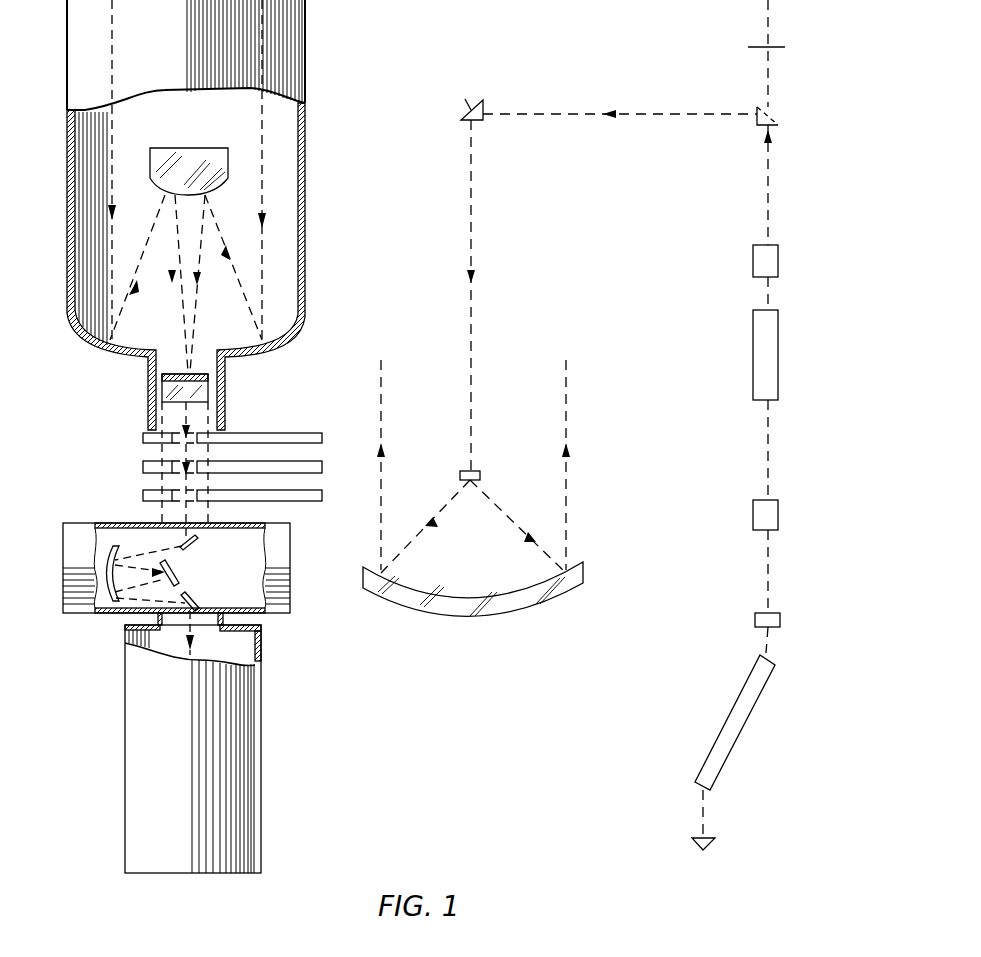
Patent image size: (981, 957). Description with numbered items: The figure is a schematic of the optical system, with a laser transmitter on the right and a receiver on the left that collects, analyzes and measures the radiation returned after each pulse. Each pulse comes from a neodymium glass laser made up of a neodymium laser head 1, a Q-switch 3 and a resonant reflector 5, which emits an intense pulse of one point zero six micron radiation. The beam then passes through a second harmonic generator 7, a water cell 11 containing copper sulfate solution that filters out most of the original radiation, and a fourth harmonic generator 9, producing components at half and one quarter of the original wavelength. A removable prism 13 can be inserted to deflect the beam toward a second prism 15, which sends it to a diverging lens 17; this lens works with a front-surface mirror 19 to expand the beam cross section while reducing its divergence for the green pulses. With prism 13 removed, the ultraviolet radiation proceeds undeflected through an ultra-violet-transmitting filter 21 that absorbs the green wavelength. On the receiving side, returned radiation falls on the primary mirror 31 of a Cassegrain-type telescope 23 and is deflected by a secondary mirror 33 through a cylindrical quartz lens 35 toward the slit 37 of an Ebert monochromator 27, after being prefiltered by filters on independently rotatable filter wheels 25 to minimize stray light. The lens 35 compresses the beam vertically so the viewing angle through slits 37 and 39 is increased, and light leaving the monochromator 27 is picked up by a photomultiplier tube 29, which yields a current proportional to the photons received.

The neodymium laser head 1 is at (743, 728).
The Q-switch 3 is at (712, 846).
The resonant reflector 5 is at (780, 620).
The second harmonic generator 7 is at (779, 520).
The fourth harmonic generator 9 is at (779, 264).
The water cell 11 is at (779, 352).
The removable prism 13 is at (778, 112).
The second prism 15 is at (471, 96).
The diverging lens 17 is at (481, 470).
The front-surface mirror 19 is at (472, 597).
The ultra-violet-transmitting filter 21 is at (757, 47).
The Cassegrain-type telescope 23 is at (307, 178).
The filter wheels 25 is at (322, 437).
The Ebert monochromator 27 is at (291, 566).
The photomultiplier tube 29 is at (262, 740).
The primary mirror 31 is at (96, 326).
The secondary mirror 33 is at (163, 197).
The cylindrical quartz lens 35 is at (164, 388).
The slit 37 is at (198, 547).
The slit 39 is at (199, 600).